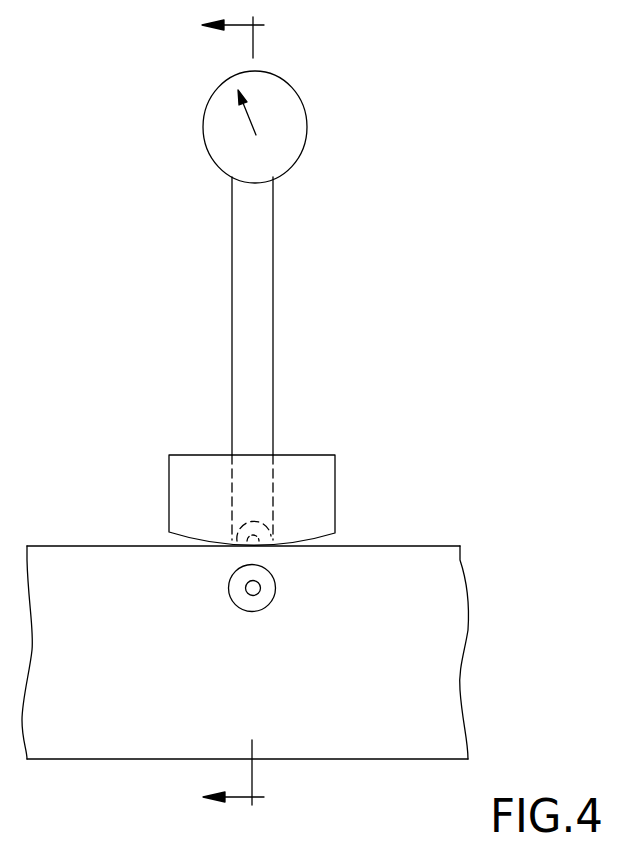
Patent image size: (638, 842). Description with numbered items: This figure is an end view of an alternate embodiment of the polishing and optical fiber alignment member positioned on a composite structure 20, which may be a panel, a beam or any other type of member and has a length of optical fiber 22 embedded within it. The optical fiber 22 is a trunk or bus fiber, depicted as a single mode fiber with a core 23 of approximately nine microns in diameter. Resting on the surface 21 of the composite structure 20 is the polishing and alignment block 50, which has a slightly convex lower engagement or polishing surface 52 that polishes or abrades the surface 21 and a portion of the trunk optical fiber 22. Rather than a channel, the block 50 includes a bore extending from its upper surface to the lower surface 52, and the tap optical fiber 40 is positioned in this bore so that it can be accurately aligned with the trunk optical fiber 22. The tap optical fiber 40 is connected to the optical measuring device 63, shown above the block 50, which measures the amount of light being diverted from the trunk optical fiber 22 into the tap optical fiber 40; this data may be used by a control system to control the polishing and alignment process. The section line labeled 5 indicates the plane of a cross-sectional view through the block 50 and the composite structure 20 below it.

The section line 5- 5 is at (224, 410).
The optical measuring device 63 is at (285, 77).
The polishing and alignment block 50 is at (322, 468).
The tap optical fiber 40 is at (238, 525).
The lower engagement or polishing surface 52 is at (331, 535).
The surface 21 is at (440, 546).
The composite structure 20 is at (463, 593).
The optical fiber 22 is at (239, 601).
The core 23 is at (256, 594).